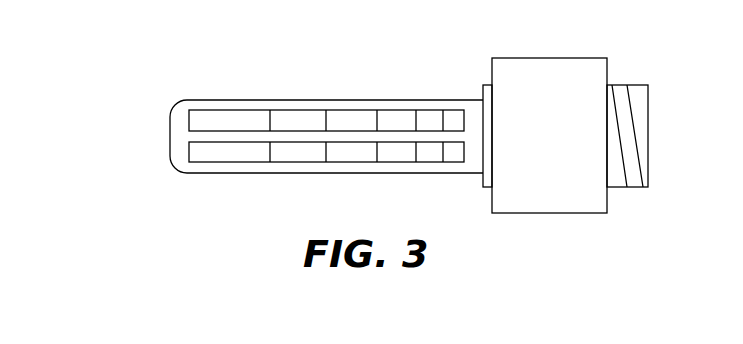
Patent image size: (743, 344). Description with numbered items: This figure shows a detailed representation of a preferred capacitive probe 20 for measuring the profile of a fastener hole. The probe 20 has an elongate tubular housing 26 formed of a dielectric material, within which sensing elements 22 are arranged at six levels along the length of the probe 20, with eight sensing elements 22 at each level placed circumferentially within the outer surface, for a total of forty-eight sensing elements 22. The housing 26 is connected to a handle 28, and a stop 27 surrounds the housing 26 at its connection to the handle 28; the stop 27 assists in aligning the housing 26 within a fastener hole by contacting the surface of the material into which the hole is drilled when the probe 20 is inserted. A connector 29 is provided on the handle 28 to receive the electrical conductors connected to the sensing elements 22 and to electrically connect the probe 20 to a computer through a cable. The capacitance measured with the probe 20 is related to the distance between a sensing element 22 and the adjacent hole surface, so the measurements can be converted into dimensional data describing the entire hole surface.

The capacitive probe 20 is at (335, 86).
The sensing elements 22 is at (398, 118).
The housing 26 is at (180, 138).
The stop 27 is at (483, 180).
The handle 28 is at (566, 143).
The connector 29 is at (642, 110).